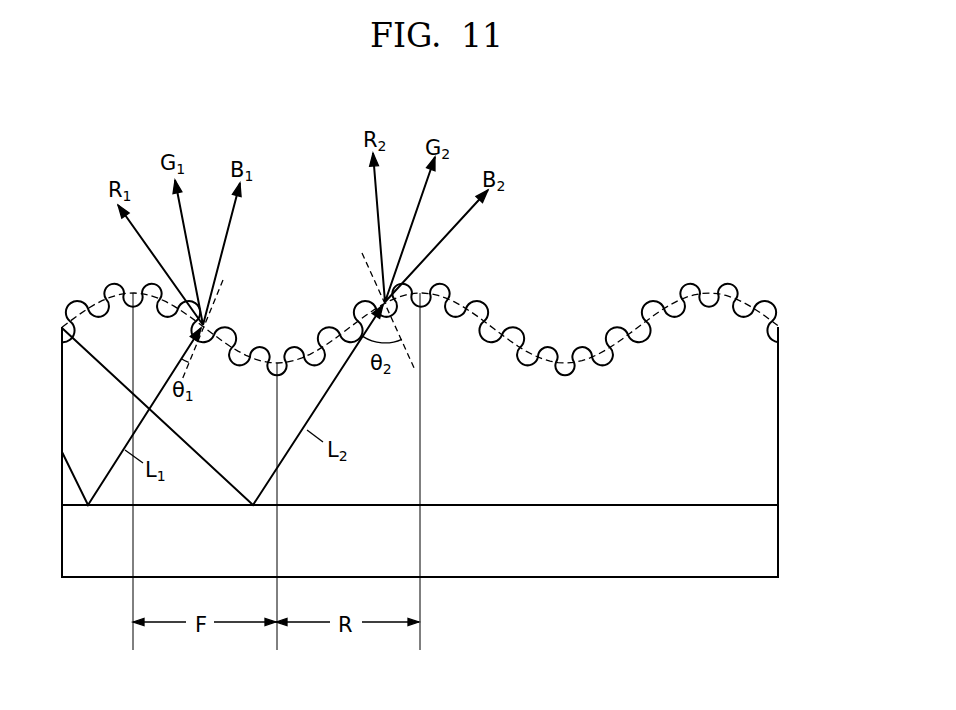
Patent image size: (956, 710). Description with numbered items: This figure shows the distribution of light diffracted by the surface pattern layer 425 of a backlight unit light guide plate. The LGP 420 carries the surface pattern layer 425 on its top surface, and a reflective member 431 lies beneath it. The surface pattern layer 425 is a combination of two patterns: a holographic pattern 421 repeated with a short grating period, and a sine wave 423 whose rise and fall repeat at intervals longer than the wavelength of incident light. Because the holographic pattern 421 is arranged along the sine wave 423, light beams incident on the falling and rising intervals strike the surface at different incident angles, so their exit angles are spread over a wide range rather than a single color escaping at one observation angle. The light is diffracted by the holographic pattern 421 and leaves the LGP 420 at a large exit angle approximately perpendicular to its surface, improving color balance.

The LGP 420 is at (770, 425).
The holographic pattern 421 is at (655, 300).
The sine wave 423 is at (707, 292).
The surface pattern layer 425 is at (421, 275).
The reflective member 431 is at (770, 540).